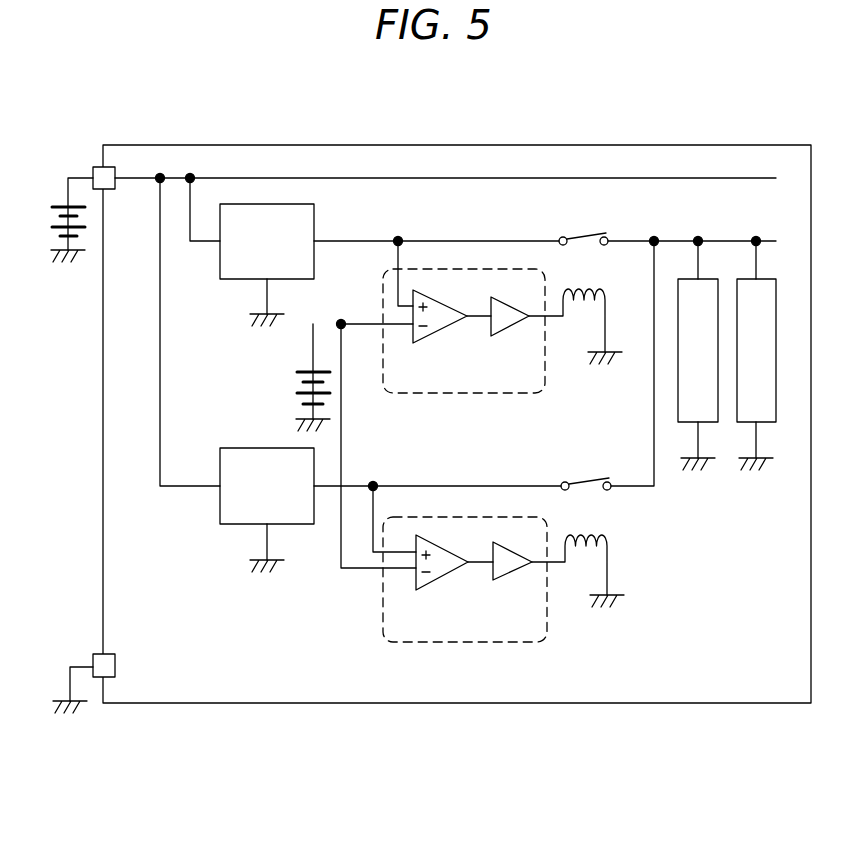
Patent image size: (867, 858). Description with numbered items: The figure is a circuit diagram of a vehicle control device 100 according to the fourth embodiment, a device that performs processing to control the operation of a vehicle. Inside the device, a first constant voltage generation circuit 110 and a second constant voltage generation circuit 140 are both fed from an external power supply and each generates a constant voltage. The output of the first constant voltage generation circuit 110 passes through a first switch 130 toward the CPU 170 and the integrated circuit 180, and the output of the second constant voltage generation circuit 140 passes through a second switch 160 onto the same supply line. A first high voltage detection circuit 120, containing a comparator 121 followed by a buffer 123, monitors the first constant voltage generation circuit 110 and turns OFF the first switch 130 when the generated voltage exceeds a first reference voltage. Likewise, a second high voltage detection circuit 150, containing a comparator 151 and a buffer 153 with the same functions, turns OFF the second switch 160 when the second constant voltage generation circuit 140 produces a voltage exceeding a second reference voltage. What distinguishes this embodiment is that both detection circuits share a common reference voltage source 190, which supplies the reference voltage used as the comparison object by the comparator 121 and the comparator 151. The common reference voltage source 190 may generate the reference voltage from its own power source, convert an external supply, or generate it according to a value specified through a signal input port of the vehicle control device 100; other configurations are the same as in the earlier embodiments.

The vehicle control device 100 is at (457, 145).
The first constant voltage generation circuit 110 is at (237, 279).
The first high voltage detection circuit 120 is at (502, 362).
The comparator 121 is at (438, 330).
The buffer 123 is at (510, 330).
The first switch 130 is at (566, 219).
The second constant voltage generation circuit 140 is at (237, 524).
The second high voltage detection circuit 150 is at (503, 608).
The comparator 151 is at (440, 580).
The buffer 153 is at (512, 580).
The second switch 160 is at (571, 468).
The CPU 170 is at (707, 278).
The integrated circuit 180 is at (763, 278).
The common reference voltage source 190 is at (282, 397).